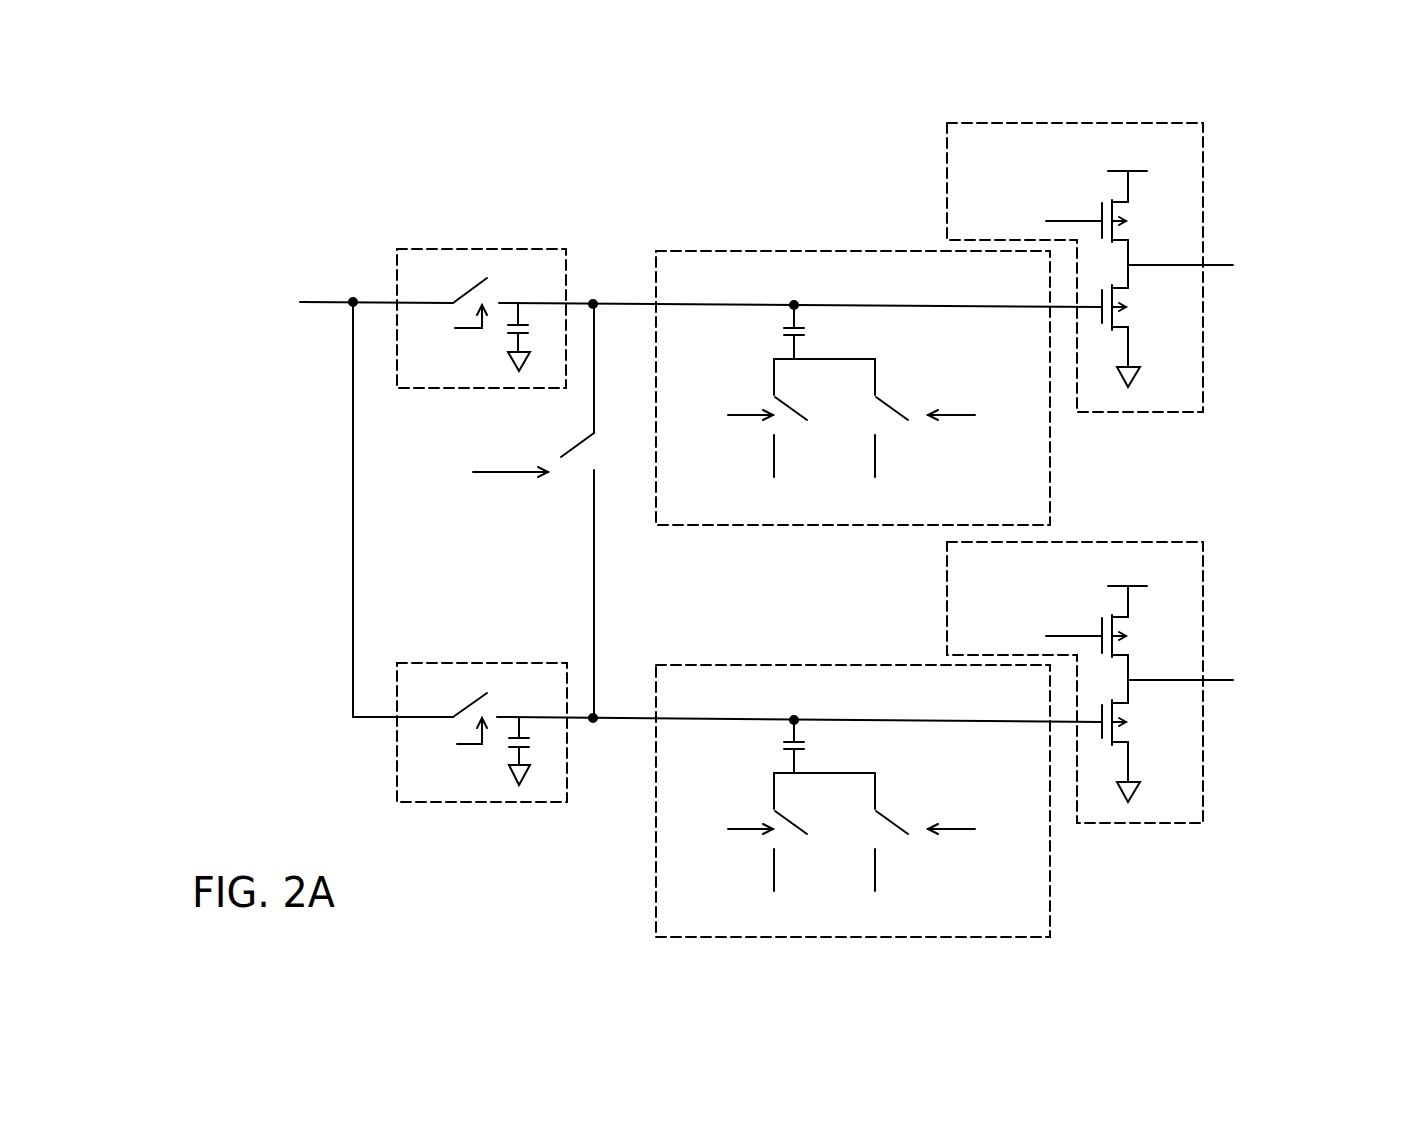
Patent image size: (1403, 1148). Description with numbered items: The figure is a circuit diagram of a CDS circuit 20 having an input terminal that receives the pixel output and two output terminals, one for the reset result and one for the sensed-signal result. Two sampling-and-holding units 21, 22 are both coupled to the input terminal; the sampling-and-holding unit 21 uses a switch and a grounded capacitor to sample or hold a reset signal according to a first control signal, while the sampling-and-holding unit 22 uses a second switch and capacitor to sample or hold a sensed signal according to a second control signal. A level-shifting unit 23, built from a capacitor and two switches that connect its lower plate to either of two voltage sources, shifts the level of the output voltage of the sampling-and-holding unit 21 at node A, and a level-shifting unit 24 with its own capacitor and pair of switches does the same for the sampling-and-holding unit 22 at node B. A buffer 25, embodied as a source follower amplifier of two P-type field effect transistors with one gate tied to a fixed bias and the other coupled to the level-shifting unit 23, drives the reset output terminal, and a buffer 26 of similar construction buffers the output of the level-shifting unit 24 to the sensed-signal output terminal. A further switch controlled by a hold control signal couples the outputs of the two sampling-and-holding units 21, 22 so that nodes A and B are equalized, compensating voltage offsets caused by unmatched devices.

The CDS circuit 20 is at (1281, 923).
The sampling-and-holding unit 21 is at (450, 250).
The sampling-and-holding unit 22 is at (450, 663).
The level-shifting unit 23 is at (815, 250).
The level-shifting unit 24 is at (815, 665).
The buffer 25 is at (1203, 210).
The buffer 26 is at (1203, 627).